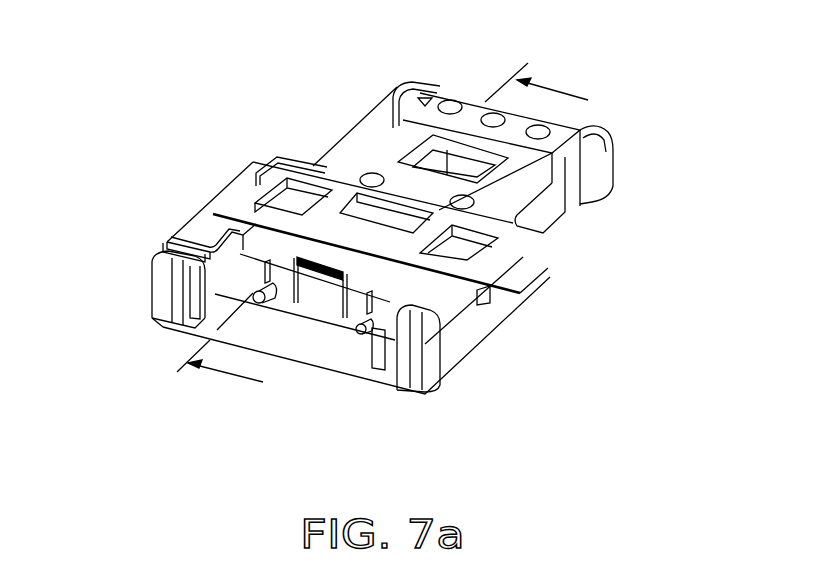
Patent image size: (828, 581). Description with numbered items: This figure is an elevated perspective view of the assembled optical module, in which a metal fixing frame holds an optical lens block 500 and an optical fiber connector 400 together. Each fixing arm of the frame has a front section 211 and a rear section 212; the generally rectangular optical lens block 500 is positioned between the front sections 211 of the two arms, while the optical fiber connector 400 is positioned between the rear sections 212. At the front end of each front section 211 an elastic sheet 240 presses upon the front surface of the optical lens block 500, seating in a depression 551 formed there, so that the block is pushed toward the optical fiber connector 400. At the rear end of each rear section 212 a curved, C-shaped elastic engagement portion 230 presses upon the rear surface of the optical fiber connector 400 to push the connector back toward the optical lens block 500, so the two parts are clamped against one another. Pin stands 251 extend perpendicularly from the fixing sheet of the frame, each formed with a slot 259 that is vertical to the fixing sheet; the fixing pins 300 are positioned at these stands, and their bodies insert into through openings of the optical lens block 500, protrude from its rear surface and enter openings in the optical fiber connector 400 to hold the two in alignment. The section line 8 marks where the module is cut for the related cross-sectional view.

The base housing 211 is at (477, 327).
The top plate 212 is at (343, 153).
The corner hook 230 is at (405, 82).
The front hook 240 is at (190, 283).
The post 251 is at (288, 295).
The latch tab 259 is at (265, 185).
The pin 300 is at (252, 297).
The window recess 400 is at (522, 156).
The cover plate 500 is at (243, 195).
The lip 551 is at (193, 260).
The section line 8- 8 is at (385, 237).